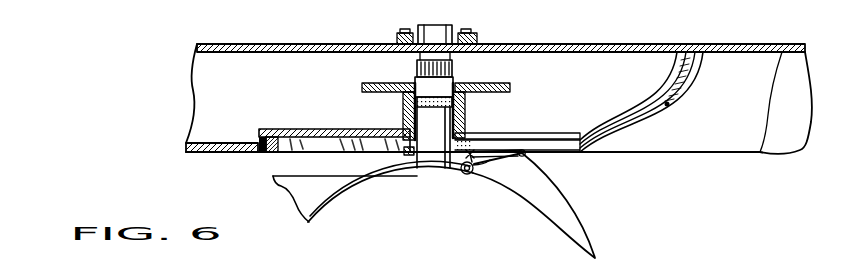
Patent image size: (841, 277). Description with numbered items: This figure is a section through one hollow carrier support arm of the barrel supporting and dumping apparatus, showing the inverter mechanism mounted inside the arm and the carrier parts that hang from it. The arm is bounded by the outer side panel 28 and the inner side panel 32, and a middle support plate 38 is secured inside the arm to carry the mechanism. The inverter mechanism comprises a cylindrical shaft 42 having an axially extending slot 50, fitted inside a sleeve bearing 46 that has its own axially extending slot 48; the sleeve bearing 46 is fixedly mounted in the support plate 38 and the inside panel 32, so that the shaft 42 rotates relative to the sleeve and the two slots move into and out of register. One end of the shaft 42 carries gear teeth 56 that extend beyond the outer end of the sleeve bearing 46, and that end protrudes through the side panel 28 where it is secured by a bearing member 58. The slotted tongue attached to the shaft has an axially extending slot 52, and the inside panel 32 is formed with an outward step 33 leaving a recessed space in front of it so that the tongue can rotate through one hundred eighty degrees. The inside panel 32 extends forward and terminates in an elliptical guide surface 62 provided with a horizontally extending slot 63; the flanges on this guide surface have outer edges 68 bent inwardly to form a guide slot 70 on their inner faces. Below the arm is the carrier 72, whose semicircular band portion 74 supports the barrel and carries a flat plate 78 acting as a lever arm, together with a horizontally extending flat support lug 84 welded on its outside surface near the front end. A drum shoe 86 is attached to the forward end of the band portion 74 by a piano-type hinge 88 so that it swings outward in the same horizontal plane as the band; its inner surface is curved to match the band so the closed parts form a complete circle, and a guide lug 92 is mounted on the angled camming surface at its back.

The outer side panel 28 is at (567, 50).
The bearing member 58 is at (473, 37).
The flat support lug 84 is at (438, 151).
The gear teeth 56 is at (417, 70).
The sleeve bearing 46 is at (408, 97).
The cylindrical shaft 42 is at (427, 90).
The middle support plate 38 is at (363, 84).
The axially extending slot 50 is at (458, 93).
The axially extending slot 48 is at (461, 118).
The inner side panel 32 is at (319, 135).
The outward step 33 is at (268, 141).
The flat plate 78 is at (288, 176).
The semicircular band portion 74 is at (365, 185).
The carrier 72 is at (337, 207).
The piano-type hinge 88 is at (468, 175).
The axially extending slot 52 is at (475, 171).
The guide lug 92 is at (494, 143).
The drum shoe 86 is at (543, 209).
The horizontally extending slot 63 is at (654, 101).
The outer edge 68 is at (686, 97).
The guide slot 70 is at (686, 71).
The elliptical guide surface 62 is at (668, 105).